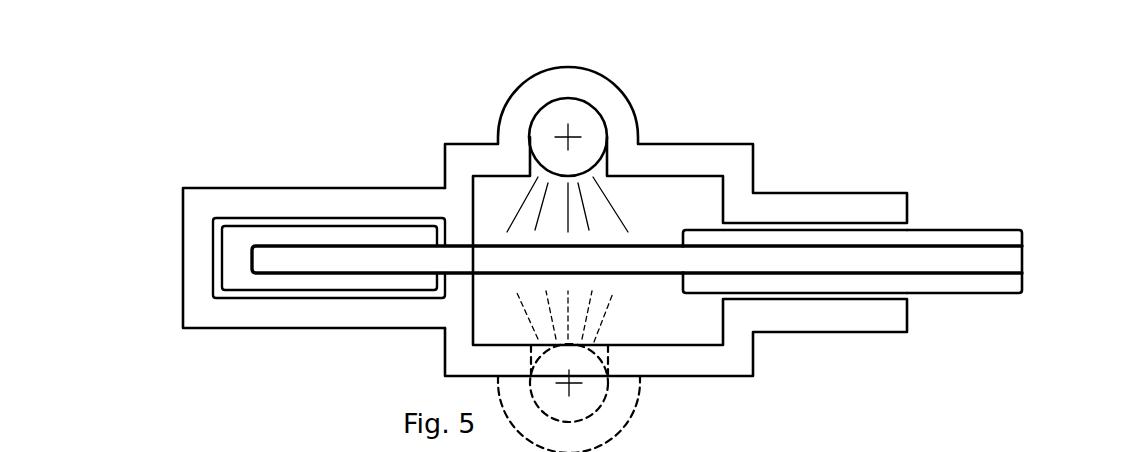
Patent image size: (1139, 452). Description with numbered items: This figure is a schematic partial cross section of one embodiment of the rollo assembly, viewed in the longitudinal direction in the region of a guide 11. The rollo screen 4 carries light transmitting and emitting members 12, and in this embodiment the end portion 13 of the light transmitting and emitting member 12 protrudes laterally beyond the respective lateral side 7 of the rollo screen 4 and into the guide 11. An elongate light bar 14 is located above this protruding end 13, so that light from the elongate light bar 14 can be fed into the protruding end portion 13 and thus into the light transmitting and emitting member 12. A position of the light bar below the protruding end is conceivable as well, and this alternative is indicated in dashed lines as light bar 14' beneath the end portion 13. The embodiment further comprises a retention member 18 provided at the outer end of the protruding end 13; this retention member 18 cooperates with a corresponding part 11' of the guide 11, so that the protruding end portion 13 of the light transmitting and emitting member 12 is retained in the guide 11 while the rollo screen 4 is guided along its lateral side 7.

The rollo screen 4 is at (922, 235).
The lateral side 7 is at (730, 232).
The guide 11 is at (562, 241).
The corresponding part of the guide 11' is at (295, 208).
The light transmitting and emitting member 12 is at (907, 260).
The end portion 13 is at (301, 256).
The elongate light bar 14 is at (517, 128).
The light bar 14' is at (632, 371).
The retention member 18 is at (237, 263).